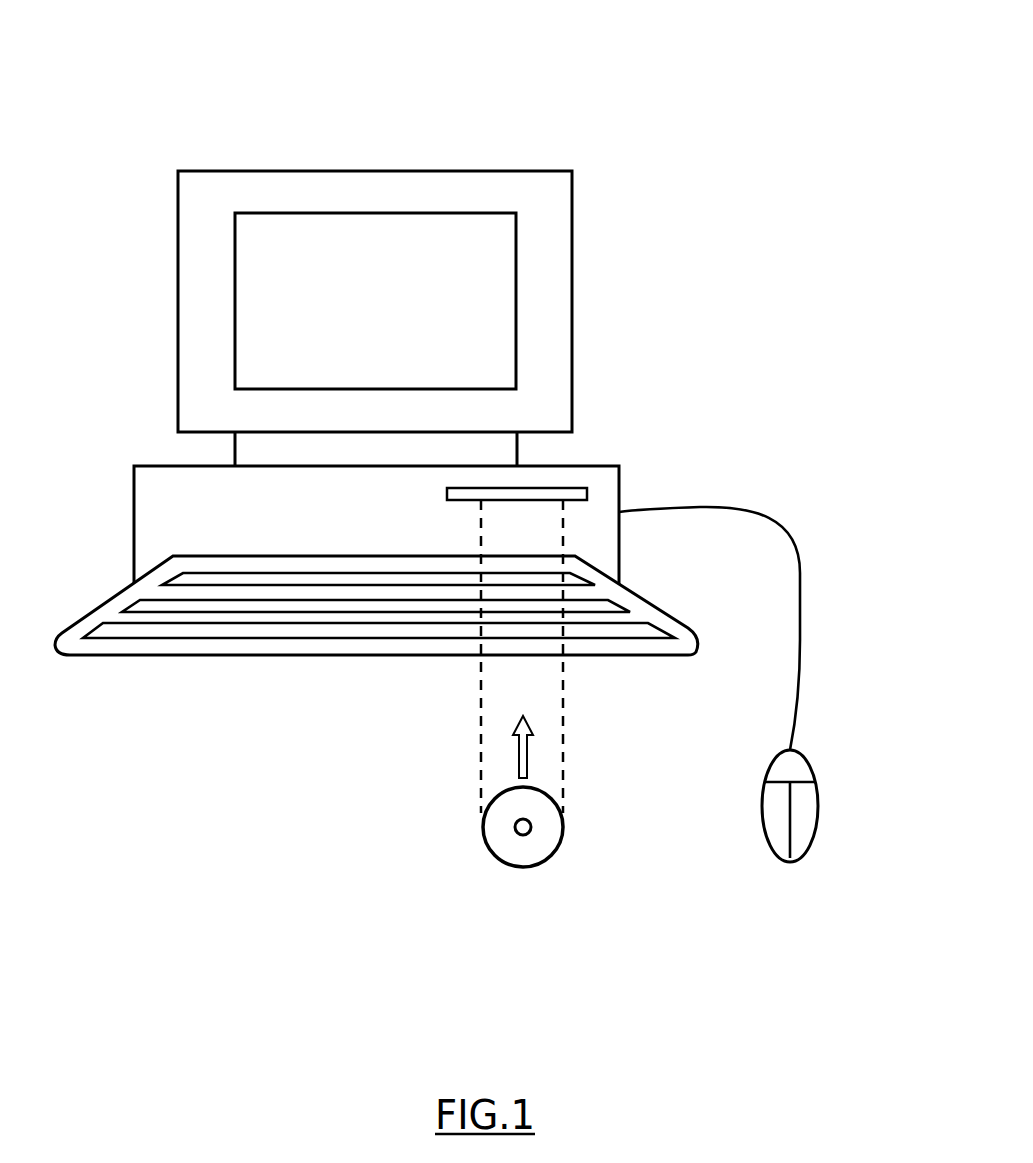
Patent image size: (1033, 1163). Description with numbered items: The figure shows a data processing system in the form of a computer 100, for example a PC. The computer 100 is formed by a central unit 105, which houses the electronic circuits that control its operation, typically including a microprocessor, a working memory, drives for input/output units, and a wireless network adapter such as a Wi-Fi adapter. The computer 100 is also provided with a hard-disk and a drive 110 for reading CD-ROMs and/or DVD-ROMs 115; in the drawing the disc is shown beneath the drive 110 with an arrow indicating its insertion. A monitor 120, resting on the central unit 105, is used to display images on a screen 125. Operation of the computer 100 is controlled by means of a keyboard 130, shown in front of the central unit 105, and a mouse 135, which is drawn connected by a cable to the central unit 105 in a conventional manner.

The computer 100 is at (652, 60).
The central unit 105 is at (158, 465).
The drive 110 is at (570, 487).
The CD-ROM/DVD-ROM 115 is at (498, 792).
The monitor 120 is at (276, 170).
The screen 125 is at (491, 259).
The keyboard 130 is at (202, 655).
The mouse 135 is at (777, 762).